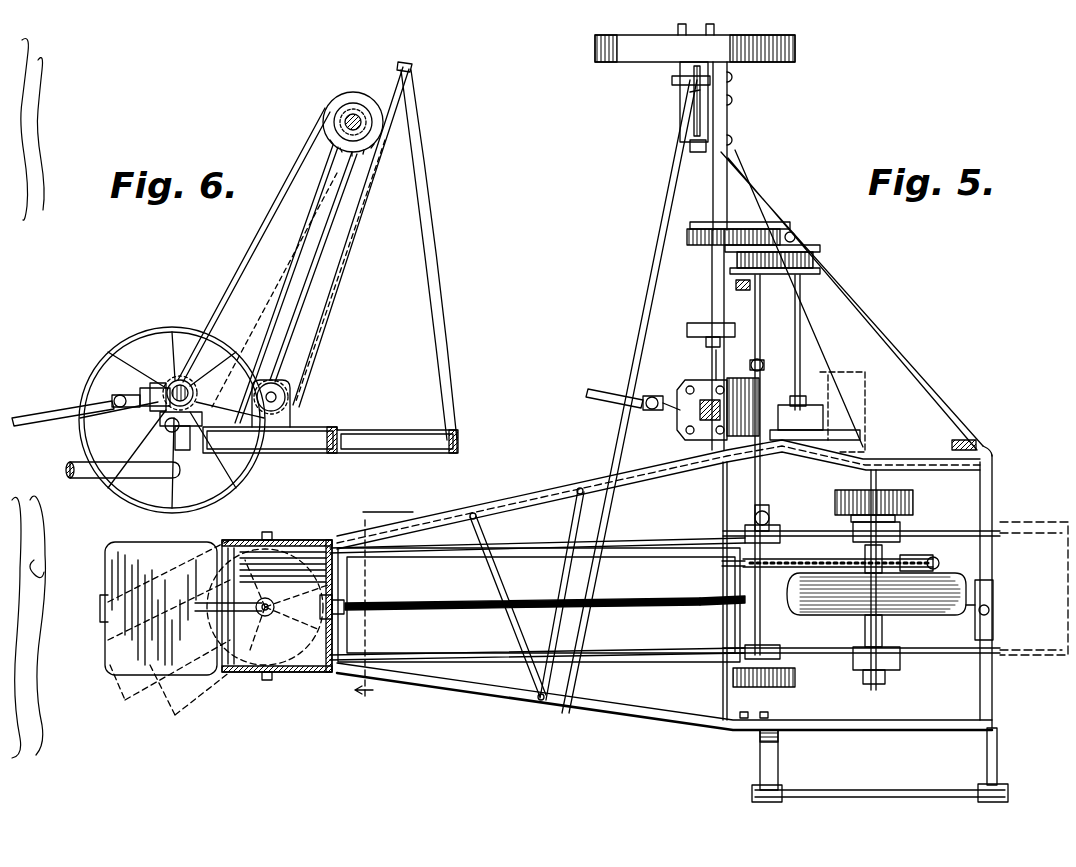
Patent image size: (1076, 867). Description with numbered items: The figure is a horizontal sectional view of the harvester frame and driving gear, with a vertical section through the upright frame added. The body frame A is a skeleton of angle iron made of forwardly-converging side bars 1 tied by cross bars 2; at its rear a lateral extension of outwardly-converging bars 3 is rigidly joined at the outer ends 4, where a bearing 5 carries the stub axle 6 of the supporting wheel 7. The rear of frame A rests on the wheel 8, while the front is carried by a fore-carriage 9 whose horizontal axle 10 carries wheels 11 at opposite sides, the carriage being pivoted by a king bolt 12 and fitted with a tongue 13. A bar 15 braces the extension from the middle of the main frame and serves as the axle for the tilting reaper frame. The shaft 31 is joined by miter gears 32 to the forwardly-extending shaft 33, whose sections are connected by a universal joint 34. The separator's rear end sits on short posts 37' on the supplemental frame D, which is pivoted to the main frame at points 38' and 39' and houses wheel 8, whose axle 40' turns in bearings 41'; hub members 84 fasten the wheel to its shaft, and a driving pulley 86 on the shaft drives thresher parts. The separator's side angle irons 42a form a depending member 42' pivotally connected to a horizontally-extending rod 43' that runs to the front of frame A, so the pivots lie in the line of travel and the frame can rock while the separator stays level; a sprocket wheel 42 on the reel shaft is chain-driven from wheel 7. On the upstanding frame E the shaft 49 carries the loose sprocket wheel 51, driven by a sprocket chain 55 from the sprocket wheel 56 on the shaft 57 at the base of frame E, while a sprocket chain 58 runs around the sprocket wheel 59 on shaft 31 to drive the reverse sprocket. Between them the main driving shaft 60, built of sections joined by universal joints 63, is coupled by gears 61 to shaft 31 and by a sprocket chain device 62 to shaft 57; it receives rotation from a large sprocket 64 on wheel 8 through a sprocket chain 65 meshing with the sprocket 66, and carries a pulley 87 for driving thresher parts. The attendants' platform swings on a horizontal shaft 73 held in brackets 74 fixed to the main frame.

In FIG. 5, the side bars 1 is at (652, 492).
In FIG. 5, the cross bars 2 is at (560, 576).
In FIG. 6, the bars 3 is at (192, 470).
In FIG. 5, the bars 3 is at (718, 302).
In FIG. 5, the outer ends 4 is at (727, 125).
In FIG. 6, the bearing 5 is at (160, 448).
In FIG. 5, the bearing 5 is at (692, 112).
In FIG. 6, the stub axle 6 is at (162, 428).
In FIG. 5, the stub axle 6 is at (690, 146).
In FIG. 6, the supporting wheel 7 is at (236, 466).
In FIG. 5, the supporting wheel 7 is at (795, 48).
In FIG. 5, the wheel 8 is at (945, 610).
In FIG. 5, the fore-carriage 9 is at (250, 672).
In FIG. 5, the horizontal axle 10 is at (268, 680).
In FIG. 5, the wheels 11 is at (298, 545).
In FIG. 5, the king bolt 12 is at (268, 595).
In FIG. 5, the tongue 13 is at (159, 631).
In FIG. 6, the bar 15 is at (150, 478).
In FIG. 5, the bar 15 is at (648, 312).
In FIG. 5, the shaft 31 is at (714, 368).
In FIG. 6, the miter gears 32 is at (168, 382).
In FIG. 5, the miter gears 32 is at (700, 440).
In FIG. 6, the forwardly-extending shaft 33 is at (42, 414).
In FIG. 5, the forwardly-extending shaft 33 is at (598, 400).
In FIG. 6, the universal joint 34 is at (117, 396).
In FIG. 5, the universal joint 34 is at (650, 412).
In FIG. 5, the short posts 37' is at (892, 595).
In FIG. 5, the pivot point 38' is at (1000, 610).
In FIG. 5, the pivot point 39' is at (715, 616).
In FIG. 5, the axle 40' is at (856, 685).
In FIG. 5, the bearings 41' is at (892, 599).
In FIG. 5, the sprocket wheel 42 is at (281, 590).
In FIG. 5, the depending member 42' is at (539, 605).
In FIG. 5, the side angle irons 42a is at (423, 549).
In FIG. 5, the horizontally-extending rod 43' is at (522, 618).
In FIG. 6, the shaft 49 is at (361, 122).
In FIG. 6, the sprocket wheel 51 is at (353, 92).
In FIG. 6, the sprocket chain 55 is at (328, 318).
In FIG. 6, the sprocket wheel 56 is at (272, 380).
In FIG. 5, the sprocket wheel 56 is at (805, 405).
In FIG. 6, the shaft 57 is at (276, 397).
In FIG. 5, the shaft 57 is at (800, 300).
In FIG. 6, the sprocket chain 58 is at (232, 282).
In FIG. 6, the sprocket wheel 59 is at (188, 382).
In FIG. 5, the sprocket wheel 59 is at (687, 334).
In FIG. 6, the main driving shaft 60 is at (330, 440).
In FIG. 5, the main driving shaft 60 is at (760, 330).
In FIG. 5, the gears 61 is at (774, 228).
In FIG. 5, the sprocket chain device 62 is at (820, 260).
In FIG. 5, the universal joints 63 is at (753, 362).
In FIG. 5, the large sprocket 64 is at (935, 560).
In FIG. 5, the sprocket chain 65 is at (820, 550).
In FIG. 5, the sprocket 66 is at (735, 556).
In FIG. 5, the horizontal shaft 73 is at (868, 792).
In FIG. 5, the brackets 74 is at (778, 765).
In FIG. 5, the hub members 84 is at (882, 555).
In FIG. 5, the driving pulley 86 is at (913, 500).
In FIG. 5, the pulley 87 is at (750, 687).
In FIG. 5, the body frame A is at (491, 708).
In FIG. 5, the supplemental frame D is at (947, 526).
In FIG. 6, the upstanding frame E is at (429, 255).
In FIG. 5, the upstanding frame E is at (952, 442).